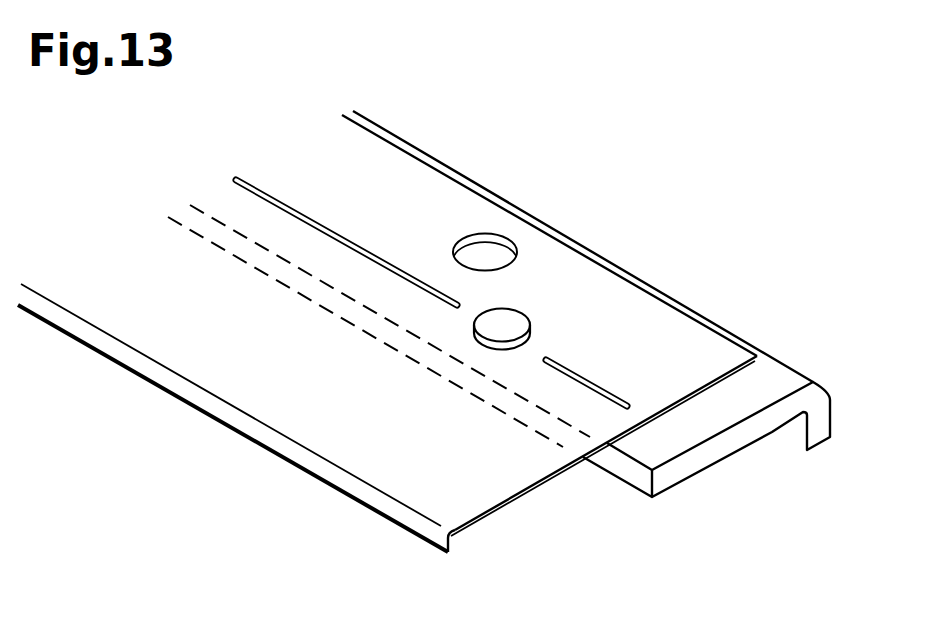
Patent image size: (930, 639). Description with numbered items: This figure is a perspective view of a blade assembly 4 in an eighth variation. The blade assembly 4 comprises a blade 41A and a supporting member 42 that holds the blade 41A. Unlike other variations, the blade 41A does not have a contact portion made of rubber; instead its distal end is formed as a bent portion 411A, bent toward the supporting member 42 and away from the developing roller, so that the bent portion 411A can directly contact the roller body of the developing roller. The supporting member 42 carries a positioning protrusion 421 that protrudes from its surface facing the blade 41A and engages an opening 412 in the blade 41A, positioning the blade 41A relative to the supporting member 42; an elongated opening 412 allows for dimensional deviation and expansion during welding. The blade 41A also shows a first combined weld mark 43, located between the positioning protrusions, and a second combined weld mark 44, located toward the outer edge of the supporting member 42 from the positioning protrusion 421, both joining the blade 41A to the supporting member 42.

The blade assembly 4 is at (687, 181).
The blade 41A is at (497, 483).
The bent portion 411A is at (343, 467).
The supporting member 42 is at (703, 453).
The positioning protrusion 421 is at (505, 317).
The opening 412 is at (527, 330).
The first combined weld mark 43 is at (352, 243).
The second combined weld mark 44 is at (612, 393).